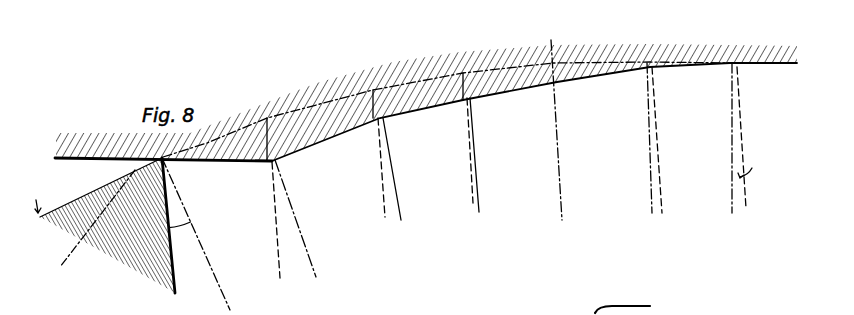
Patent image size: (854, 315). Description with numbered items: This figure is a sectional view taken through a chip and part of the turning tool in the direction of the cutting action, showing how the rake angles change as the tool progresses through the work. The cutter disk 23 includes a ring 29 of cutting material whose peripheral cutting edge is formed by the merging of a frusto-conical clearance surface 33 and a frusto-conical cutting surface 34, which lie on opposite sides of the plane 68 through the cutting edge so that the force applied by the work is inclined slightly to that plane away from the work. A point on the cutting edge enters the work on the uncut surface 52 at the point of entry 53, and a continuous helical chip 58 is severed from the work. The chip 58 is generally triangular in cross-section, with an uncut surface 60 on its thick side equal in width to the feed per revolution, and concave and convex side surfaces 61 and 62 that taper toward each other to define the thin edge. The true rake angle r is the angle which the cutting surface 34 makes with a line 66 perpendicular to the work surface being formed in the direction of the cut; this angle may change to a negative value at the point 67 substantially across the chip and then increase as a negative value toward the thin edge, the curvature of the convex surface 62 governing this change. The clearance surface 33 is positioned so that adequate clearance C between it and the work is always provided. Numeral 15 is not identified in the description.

The blade body wall section 15 is at (291, 95).
The cutter disk 23 is at (127, 237).
The ring of cutting material 29 is at (126, 183).
The clearance surface 33 is at (267, 121).
The cutting surface 34 is at (277, 258).
The uncut surface of the work 52 is at (108, 160).
The point of entry 53 is at (162, 158).
The chip 58 is at (797, 63).
The uncut surface of the chip 60 is at (233, 161).
The concave side surface of the chip 61 is at (418, 108).
The convex side surface of the chip 62 is at (430, 72).
The perpendicular line 66 is at (203, 243).
The point of negative rake 67 is at (552, 50).
The plane through the cutting edge 68 is at (75, 258).
The clearance C is at (43, 222).
The rake angle r is at (209, 273).